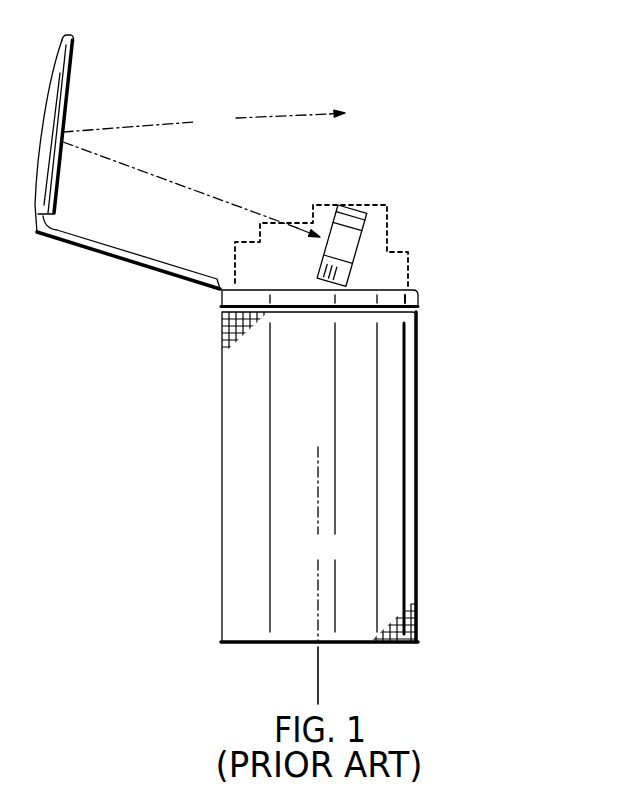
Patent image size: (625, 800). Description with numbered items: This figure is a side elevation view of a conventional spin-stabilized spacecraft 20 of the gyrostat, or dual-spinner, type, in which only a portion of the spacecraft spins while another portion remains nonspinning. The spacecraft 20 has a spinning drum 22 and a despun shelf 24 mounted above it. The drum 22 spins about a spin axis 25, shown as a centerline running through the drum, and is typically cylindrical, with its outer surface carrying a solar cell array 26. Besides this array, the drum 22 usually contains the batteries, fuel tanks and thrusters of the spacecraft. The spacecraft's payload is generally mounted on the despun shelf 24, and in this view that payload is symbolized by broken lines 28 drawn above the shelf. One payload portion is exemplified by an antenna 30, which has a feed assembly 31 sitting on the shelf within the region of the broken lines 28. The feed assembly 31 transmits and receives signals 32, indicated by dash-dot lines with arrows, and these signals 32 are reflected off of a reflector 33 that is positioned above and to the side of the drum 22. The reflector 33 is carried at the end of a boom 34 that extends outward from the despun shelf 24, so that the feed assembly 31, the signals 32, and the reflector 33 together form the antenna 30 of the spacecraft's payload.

The spin-stabilized spacecraft 20 is at (465, 235).
The spinning drum 22 is at (428, 420).
The despun shelf 24 is at (430, 292).
The spin axis 25 is at (320, 575).
The solar cell array 26 is at (418, 620).
The broken lines 28 is at (387, 217).
The antenna 30 is at (89, 44).
The feed assembly 31 is at (330, 212).
The signals 32 is at (204, 173).
The reflector 33 is at (63, 107).
The boom 34 is at (87, 249).